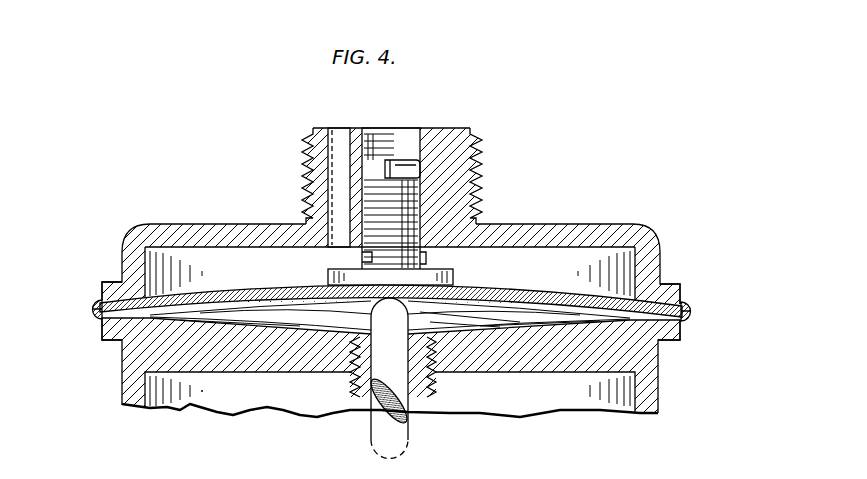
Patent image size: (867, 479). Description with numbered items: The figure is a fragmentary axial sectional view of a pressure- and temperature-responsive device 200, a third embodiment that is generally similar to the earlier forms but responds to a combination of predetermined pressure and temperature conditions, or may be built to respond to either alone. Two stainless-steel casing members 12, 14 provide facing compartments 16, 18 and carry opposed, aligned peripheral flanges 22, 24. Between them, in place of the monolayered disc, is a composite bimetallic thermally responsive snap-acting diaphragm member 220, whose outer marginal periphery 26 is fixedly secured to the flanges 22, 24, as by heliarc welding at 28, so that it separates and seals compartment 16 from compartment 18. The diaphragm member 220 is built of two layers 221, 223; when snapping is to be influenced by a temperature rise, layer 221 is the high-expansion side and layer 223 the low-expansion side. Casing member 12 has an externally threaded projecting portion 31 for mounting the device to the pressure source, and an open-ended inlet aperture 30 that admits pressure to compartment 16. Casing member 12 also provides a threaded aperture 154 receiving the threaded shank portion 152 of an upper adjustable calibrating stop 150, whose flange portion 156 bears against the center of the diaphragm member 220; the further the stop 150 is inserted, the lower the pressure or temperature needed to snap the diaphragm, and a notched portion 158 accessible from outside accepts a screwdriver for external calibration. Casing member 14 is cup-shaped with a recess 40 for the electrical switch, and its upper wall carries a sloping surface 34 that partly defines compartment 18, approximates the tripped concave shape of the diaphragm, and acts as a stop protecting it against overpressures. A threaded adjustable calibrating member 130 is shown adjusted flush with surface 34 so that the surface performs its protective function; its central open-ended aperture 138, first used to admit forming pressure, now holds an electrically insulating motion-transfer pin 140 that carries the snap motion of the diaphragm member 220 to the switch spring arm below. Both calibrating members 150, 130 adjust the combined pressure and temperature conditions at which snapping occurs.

The casing member 12 is at (237, 228).
The casing member 14 is at (656, 385).
The compartment 16 is at (565, 262).
The compartment 18 is at (455, 312).
The flange 22 is at (684, 298).
The flange 24 is at (672, 332).
The marginal periphery 26 is at (691, 305).
The heliarc weld 28 is at (693, 313).
The inlet aperture 30 is at (340, 136).
The externally threaded projecting portion 31 is at (480, 146).
The sloping surface 34 is at (278, 330).
The recess 40 is at (562, 402).
The adjustable calibrating member 130 is at (352, 385).
The open-ended aperture 138 is at (366, 413).
The motion-transfer pin 140 is at (392, 440).
The calibrating stop 150 is at (430, 264).
The threaded shank portion 152 is at (368, 259).
The threaded aperture 154 is at (416, 137).
The flange portion 156 is at (455, 278).
The notched portion 158 is at (388, 164).
The pressure-responsive device 200 is at (196, 203).
The composite thermally responsive snap-acting diaphragm member 220 is at (500, 297).
The layer 221 is at (232, 301).
The layer 223 is at (292, 299).